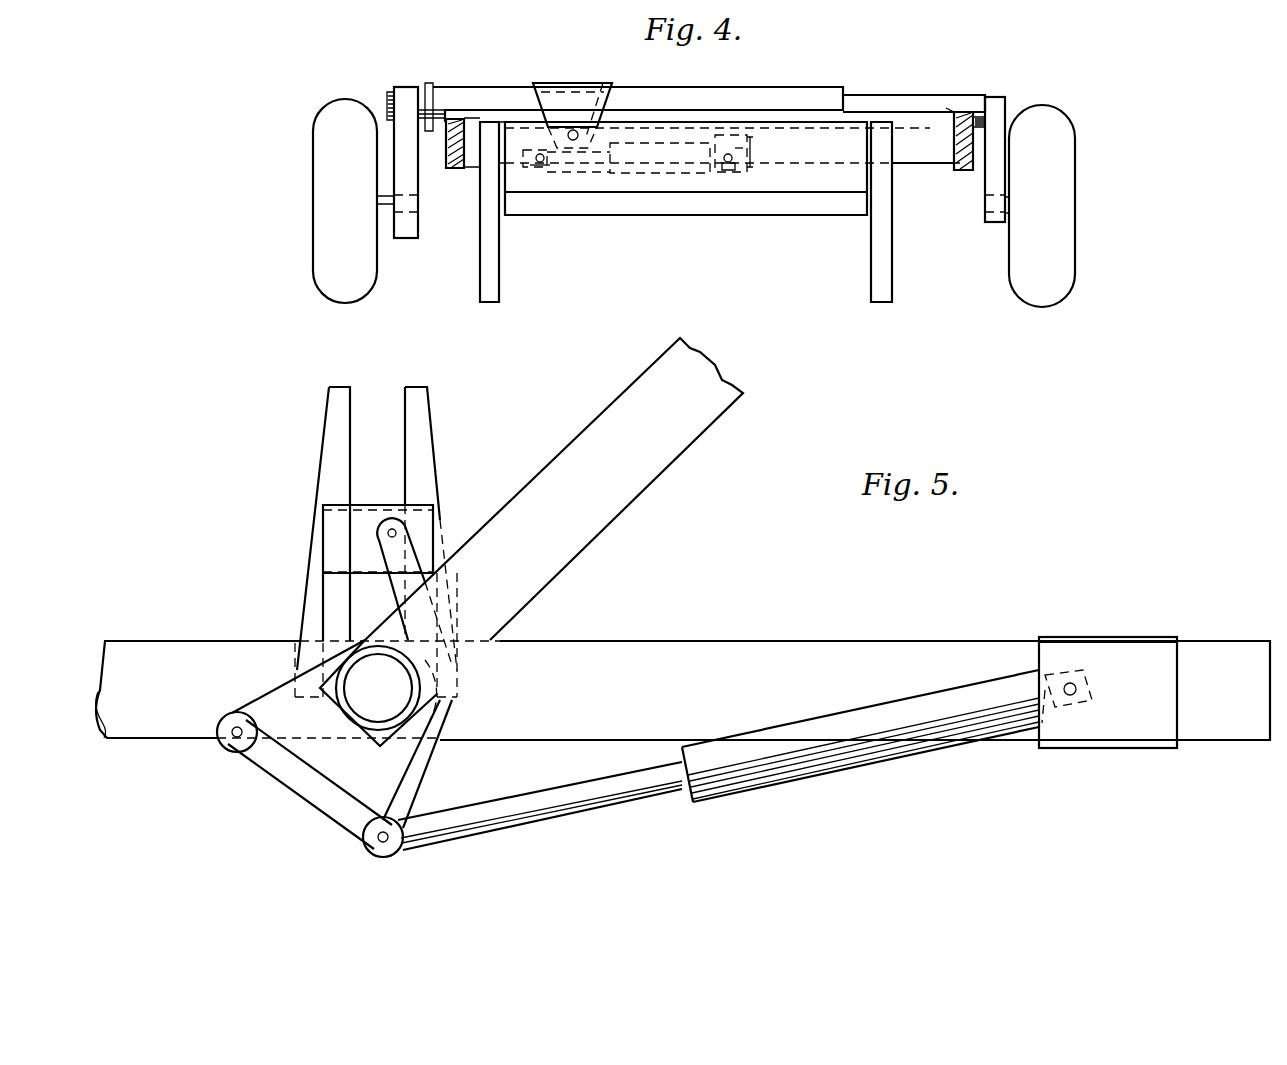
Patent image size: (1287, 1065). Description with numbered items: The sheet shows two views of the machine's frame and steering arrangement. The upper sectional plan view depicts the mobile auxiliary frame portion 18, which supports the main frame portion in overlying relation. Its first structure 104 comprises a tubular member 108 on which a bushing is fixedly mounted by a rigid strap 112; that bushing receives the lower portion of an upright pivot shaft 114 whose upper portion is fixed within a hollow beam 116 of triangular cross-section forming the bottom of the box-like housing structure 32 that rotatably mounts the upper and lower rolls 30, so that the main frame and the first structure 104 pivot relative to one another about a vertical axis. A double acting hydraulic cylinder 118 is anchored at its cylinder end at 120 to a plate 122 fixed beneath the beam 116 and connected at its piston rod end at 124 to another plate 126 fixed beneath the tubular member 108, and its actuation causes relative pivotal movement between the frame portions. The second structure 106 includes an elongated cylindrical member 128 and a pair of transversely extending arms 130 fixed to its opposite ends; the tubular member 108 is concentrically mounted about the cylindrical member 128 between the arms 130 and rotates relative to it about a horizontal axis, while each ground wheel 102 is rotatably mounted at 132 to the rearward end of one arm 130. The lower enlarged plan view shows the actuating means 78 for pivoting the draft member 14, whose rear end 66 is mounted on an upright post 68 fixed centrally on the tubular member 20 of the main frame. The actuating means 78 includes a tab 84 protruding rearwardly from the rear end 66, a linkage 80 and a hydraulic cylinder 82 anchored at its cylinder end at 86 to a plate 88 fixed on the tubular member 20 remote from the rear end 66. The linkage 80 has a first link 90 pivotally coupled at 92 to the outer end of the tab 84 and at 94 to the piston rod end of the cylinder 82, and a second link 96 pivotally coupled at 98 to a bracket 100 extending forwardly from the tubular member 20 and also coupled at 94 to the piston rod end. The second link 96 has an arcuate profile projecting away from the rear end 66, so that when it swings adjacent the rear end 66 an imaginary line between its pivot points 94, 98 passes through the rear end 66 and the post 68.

In FIG. 5, the draft member 14 is at (622, 508).
In FIG. 4, the mobile auxiliary frame portion 18 is at (480, 85).
In FIG. 5, the tubular member 20 is at (790, 640).
In FIG. 4, the elongated rolls 30 is at (800, 197).
In FIG. 4, the box-like housing structure 32 is at (950, 185).
In FIG. 5, the rear end of the draft member 66 is at (340, 710).
In FIG. 5, the upright post 68 is at (392, 692).
In FIG. 5, the actuating means 78 is at (565, 822).
In FIG. 5, the linkage 80 is at (440, 765).
In FIG. 5, the hydraulic cylinder 82 is at (767, 783).
In FIG. 5, the tab 84 is at (267, 690).
In FIG. 5, the pivot anchor of cylinder end 86 is at (1077, 689).
In FIG. 5, the plate 88 is at (1125, 637).
In FIG. 5, the first link 90 is at (290, 795).
In FIG. 5, the pivot point 92 is at (230, 750).
In FIG. 5, the pivot point 94 is at (383, 850).
In FIG. 5, the second link 96 is at (390, 584).
In FIG. 5, the pivot point 98 is at (390, 528).
In FIG. 5, the bracket 100 is at (318, 490).
In FIG. 4, the ground wheels 102 is at (313, 218).
In FIG. 4, the first structure 104 is at (700, 88).
In FIG. 4, the second structure 106 is at (880, 90).
In FIG. 4, the tubular member 108 is at (800, 88).
In FIG. 4, the rigid strap 112 is at (575, 82).
In FIG. 4, the upright pivot shaft 114 is at (578, 130).
In FIG. 4, the hollow beam 116 is at (905, 165).
In FIG. 4, the hydraulic cylinder 118 is at (640, 173).
In FIG. 4, the pivot anchor of cylinder end 120 is at (728, 172).
In FIG. 4, the plate 122 is at (745, 152).
In FIG. 4, the pivot connection of piston rod end 124 is at (550, 163).
In FIG. 4, the plate 126 is at (540, 168).
In FIG. 4, the elongated cylindrical member 128 is at (935, 92).
In FIG. 4, the transversely extending arms 130 is at (418, 170).
In FIG. 4, the wheel mounting 132 is at (385, 240).